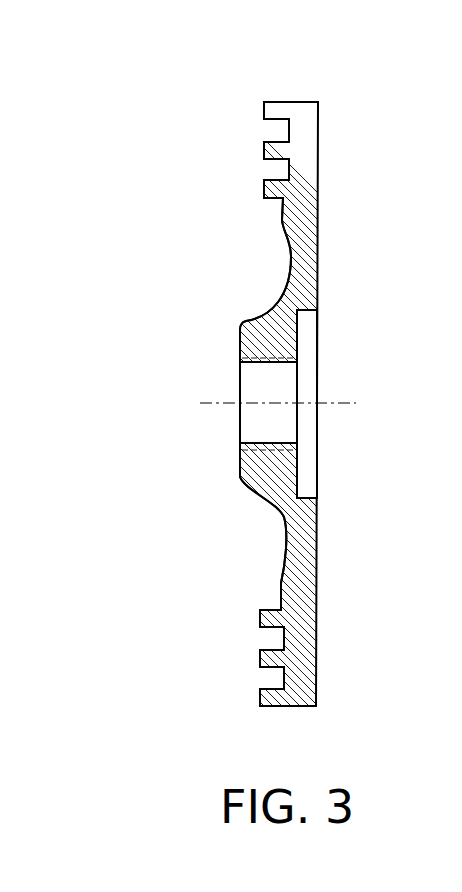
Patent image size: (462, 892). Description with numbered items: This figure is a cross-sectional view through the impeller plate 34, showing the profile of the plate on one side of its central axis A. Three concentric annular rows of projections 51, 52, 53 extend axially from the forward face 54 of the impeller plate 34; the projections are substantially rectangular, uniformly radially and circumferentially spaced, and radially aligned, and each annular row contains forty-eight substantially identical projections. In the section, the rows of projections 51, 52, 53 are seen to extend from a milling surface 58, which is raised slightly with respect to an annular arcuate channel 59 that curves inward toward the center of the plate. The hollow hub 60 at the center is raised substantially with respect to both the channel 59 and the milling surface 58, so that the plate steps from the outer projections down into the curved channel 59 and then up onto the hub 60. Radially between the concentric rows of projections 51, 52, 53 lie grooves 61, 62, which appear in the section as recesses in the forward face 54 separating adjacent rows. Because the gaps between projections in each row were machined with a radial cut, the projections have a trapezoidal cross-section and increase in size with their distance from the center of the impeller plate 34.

The impeller plate 34 is at (352, 155).
The projections (first annular row) 51 is at (260, 697).
The projections (second annular row) 52 is at (260, 657).
The projections (third annular row) 53 is at (260, 620).
The forward face 54 is at (226, 160).
The milling surface 58 is at (283, 222).
The annular arcuate channel 59 is at (283, 518).
The hollow hub 60 is at (240, 458).
The groove 61 is at (288, 131).
The groove 62 is at (288, 172).
The axis of rotation A is at (342, 402).